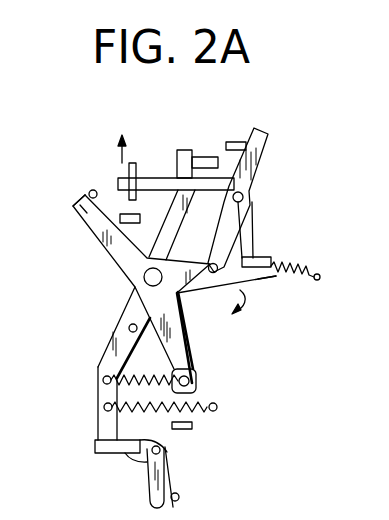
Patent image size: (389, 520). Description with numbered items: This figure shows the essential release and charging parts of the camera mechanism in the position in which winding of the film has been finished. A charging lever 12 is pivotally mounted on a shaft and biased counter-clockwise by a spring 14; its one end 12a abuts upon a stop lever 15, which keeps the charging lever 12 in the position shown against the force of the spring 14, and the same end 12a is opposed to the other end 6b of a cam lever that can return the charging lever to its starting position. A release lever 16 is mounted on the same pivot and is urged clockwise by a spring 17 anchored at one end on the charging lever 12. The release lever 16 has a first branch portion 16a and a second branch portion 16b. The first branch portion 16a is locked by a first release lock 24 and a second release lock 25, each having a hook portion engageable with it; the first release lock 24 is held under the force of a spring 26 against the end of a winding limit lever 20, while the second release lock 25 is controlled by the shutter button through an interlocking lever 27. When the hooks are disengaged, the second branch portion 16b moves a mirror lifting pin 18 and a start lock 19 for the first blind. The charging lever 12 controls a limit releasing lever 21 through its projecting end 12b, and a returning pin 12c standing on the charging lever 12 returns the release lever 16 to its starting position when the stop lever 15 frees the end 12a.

The other end of cam lever 6b is at (192, 425).
The charging lever 12 is at (133, 303).
The one end of charging lever 12a is at (98, 420).
The projecting end of charging lever 12b is at (180, 150).
The returning pin 12c is at (129, 328).
The spring 14 is at (207, 405).
The stop lever 15 is at (148, 468).
The release lever 16 is at (179, 300).
The first branch portion 16a is at (265, 258).
The second branch portion 16b is at (80, 208).
The spring 17 is at (188, 366).
The mirror lifting pin 18 is at (92, 190).
The start lock 19 is at (140, 218).
The winding limit lever 20 is at (230, 142).
The limit releasing lever 21 is at (210, 157).
The first release lock 24 is at (253, 183).
The second release lock 25 is at (246, 219).
The spring 26 is at (300, 280).
The interlocking lever 27 is at (131, 163).